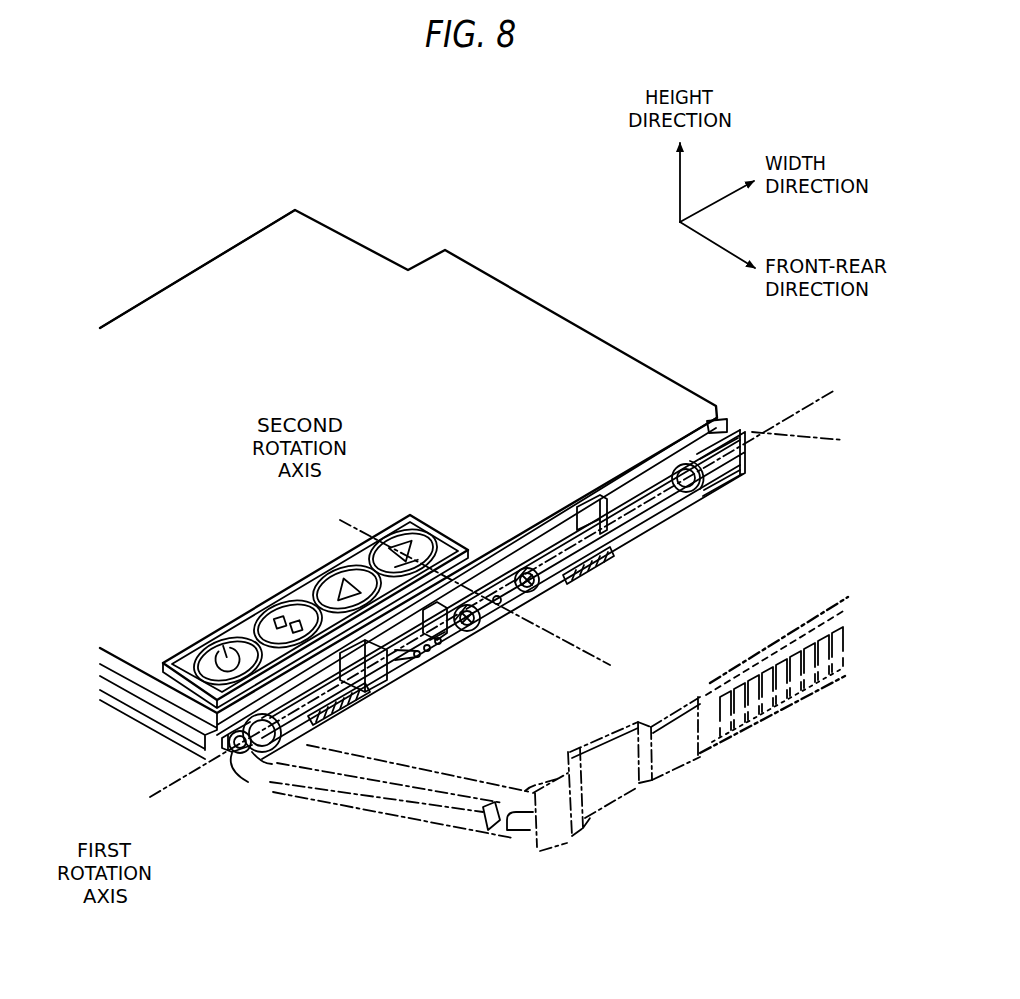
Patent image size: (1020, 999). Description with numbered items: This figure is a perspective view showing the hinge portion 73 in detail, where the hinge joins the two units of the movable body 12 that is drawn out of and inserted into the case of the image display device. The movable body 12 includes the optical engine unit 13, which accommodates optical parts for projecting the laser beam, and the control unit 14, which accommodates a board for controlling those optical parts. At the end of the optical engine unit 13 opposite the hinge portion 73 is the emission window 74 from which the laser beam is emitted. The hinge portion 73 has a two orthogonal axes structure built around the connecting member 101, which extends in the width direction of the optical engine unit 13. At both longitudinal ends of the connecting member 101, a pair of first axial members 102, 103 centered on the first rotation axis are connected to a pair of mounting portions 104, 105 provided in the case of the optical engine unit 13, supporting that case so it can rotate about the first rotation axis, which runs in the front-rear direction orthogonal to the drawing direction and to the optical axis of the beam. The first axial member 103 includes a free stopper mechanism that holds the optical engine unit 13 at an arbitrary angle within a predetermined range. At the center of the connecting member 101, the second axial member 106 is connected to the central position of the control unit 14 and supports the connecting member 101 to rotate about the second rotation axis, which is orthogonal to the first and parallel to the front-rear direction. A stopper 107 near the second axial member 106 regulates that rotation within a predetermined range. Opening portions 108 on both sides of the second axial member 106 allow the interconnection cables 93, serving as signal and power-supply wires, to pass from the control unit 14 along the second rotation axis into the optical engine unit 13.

The movable body 12 is at (638, 312).
The optical engine unit 13 is at (733, 752).
The control unit 14 is at (507, 274).
The hinge portion 73 is at (750, 393).
The emission window 74 is at (613, 782).
The interconnection cables 93 is at (590, 573).
The connecting member 101 is at (695, 522).
The first axial member 102 is at (265, 754).
The first axial member 103 is at (730, 494).
The mounting portion 104 is at (236, 770).
The mounting portion 105 is at (736, 410).
The second axial member 106 is at (503, 602).
The stopper 107 is at (524, 570).
The opening portions 108 is at (614, 532).